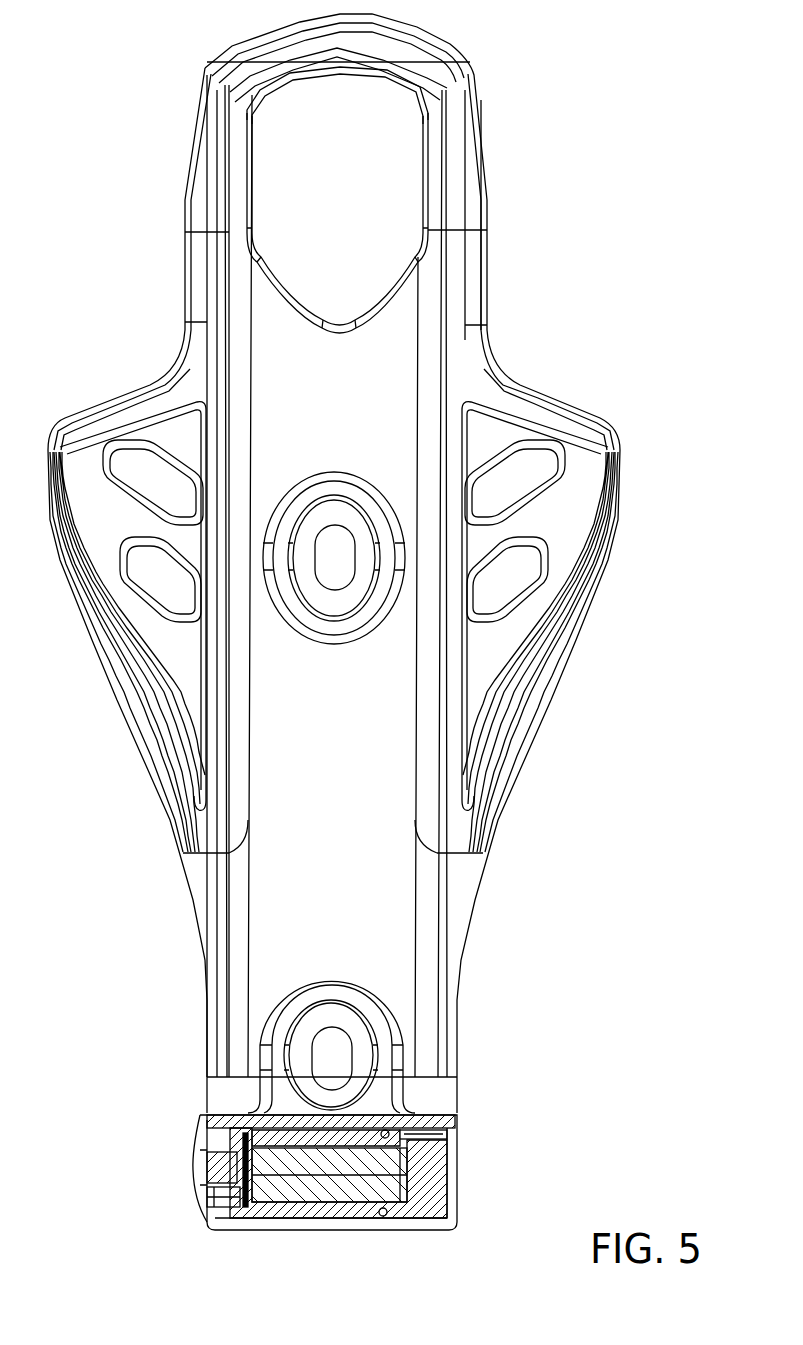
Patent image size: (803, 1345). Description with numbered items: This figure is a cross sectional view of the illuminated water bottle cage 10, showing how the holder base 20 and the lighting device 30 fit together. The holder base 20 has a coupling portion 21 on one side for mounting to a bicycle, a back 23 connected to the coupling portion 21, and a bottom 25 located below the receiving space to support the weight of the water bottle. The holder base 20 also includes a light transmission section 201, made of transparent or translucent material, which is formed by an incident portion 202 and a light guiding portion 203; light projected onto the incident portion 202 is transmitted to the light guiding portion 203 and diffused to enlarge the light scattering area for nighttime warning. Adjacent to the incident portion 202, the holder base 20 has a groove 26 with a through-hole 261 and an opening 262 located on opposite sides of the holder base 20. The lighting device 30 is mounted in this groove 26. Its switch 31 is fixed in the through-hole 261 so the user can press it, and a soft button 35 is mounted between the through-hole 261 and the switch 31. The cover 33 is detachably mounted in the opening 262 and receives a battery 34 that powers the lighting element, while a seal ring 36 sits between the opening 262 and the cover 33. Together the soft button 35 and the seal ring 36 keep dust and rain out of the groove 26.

The illuminated water bottle cage 10 is at (115, 96).
The holder base 20 is at (164, 968).
The coupling portion 21 is at (336, 550).
The back 23 is at (200, 156).
The bottom 25 is at (255, 1222).
The groove 26 is at (428, 1208).
The lighting device 30 is at (206, 1114).
The switch 31 is at (204, 1192).
The cover 33 is at (457, 1170).
The battery 34 is at (320, 1193).
The soft button 35 is at (200, 1168).
The seal ring 36 is at (385, 1217).
The light transmission section 201 is at (385, 684).
The incident portion 202 is at (382, 1108).
The light guiding portion 203 is at (394, 328).
The through-hole 261 is at (202, 1146).
The opening 262 is at (455, 1134).